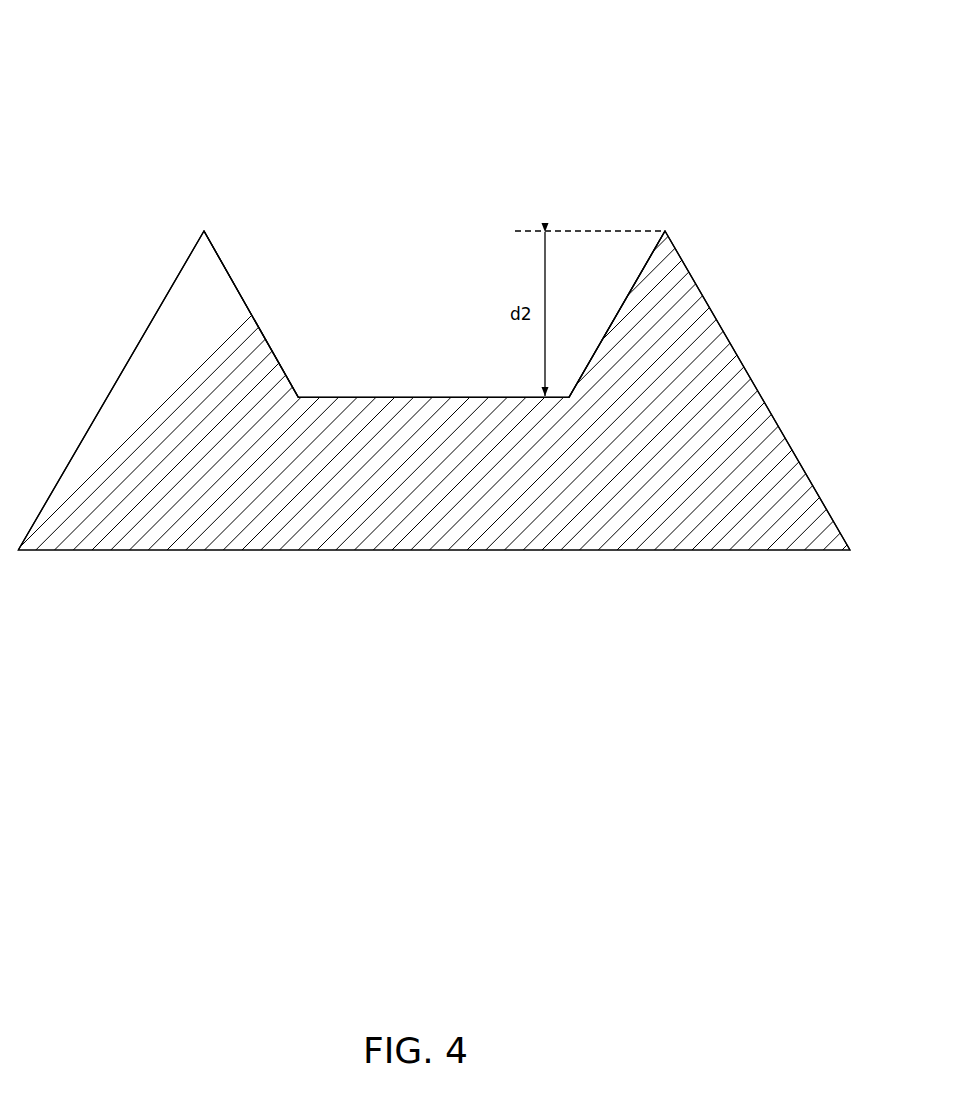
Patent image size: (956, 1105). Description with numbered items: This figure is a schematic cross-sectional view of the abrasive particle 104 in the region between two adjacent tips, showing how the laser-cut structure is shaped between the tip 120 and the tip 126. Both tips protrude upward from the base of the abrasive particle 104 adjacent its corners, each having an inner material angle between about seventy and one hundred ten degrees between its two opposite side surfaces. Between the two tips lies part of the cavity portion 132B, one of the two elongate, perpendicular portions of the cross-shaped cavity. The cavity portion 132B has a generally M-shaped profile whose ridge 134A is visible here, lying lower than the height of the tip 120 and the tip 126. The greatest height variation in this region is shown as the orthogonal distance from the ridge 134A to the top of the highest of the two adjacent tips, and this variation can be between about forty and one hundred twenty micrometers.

The abrasive particle 104 is at (110, 75).
The tip 120 is at (183, 265).
The tip 126 is at (684, 257).
The cavity portion 132B is at (342, 237).
The ridge 134A is at (375, 397).